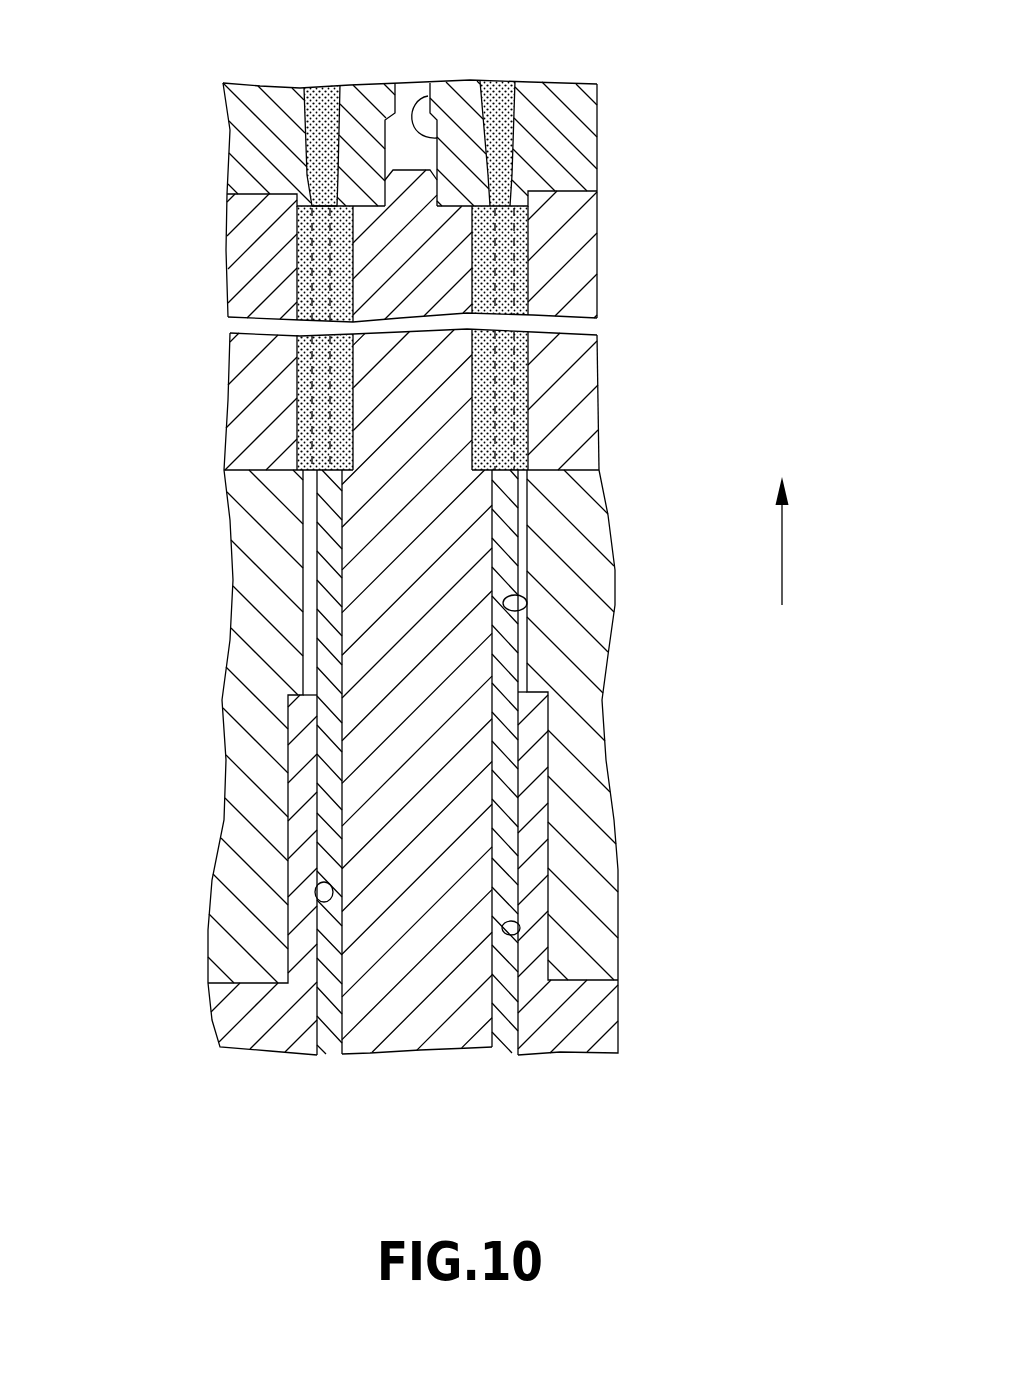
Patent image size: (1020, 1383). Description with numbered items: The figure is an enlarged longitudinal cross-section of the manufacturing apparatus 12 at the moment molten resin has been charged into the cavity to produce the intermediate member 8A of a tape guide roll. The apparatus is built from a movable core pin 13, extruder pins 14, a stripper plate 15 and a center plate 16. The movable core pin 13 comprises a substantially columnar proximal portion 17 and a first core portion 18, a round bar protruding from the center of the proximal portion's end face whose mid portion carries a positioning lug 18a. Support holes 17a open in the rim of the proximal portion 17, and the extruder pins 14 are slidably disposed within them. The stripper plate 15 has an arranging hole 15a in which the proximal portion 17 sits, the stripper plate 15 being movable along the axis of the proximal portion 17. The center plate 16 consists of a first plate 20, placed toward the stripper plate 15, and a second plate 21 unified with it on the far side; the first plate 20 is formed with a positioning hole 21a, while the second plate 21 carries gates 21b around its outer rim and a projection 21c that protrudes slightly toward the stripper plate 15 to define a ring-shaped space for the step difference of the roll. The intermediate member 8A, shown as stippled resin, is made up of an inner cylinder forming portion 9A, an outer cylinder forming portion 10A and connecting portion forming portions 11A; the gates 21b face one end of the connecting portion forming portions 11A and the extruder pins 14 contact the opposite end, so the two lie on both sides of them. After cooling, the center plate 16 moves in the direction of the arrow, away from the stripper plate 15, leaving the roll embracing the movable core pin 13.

The manufacturing apparatus 12 is at (674, 110).
The center plate 16 is at (707, 125).
The second plate 21 is at (580, 150).
The positioning hole 21a is at (422, 98).
The gate 21b is at (312, 200).
The projection 21c is at (335, 232).
The first plate 20 is at (590, 203).
The first core portion 18 is at (447, 397).
The positioning lug 18a is at (403, 160).
The intermediate member 8A is at (520, 278).
The inner cylinder forming portion 9A is at (480, 258).
The connecting portion forming portion 11A is at (503, 298).
The outer cylinder forming portion 10A is at (515, 437).
The stripper plate 15 is at (607, 542).
The arranging hole 15a is at (527, 608).
The extruder pin 14 is at (328, 793).
The movable core pin 13 is at (375, 1040).
The proximal portion 17 is at (463, 1040).
The support hole 17a is at (318, 896).